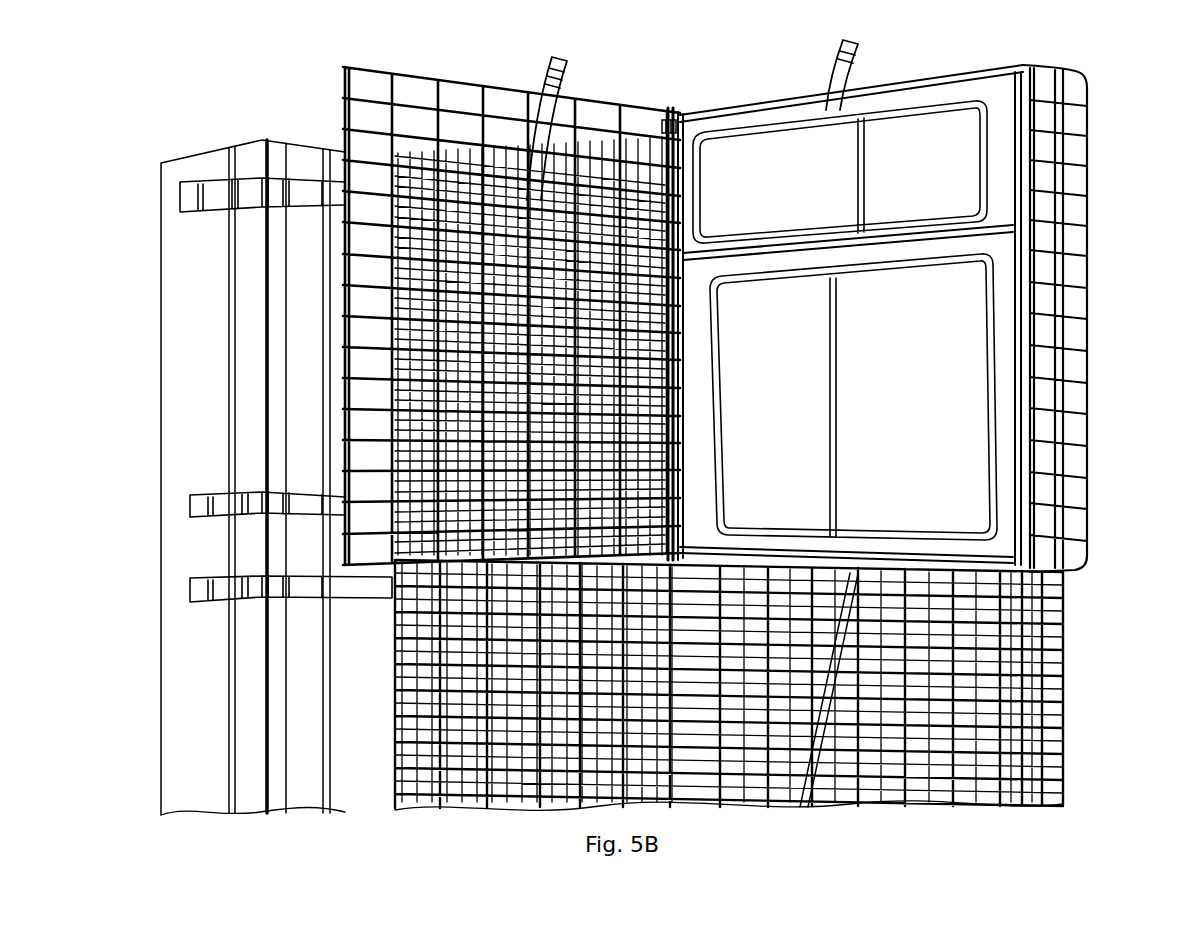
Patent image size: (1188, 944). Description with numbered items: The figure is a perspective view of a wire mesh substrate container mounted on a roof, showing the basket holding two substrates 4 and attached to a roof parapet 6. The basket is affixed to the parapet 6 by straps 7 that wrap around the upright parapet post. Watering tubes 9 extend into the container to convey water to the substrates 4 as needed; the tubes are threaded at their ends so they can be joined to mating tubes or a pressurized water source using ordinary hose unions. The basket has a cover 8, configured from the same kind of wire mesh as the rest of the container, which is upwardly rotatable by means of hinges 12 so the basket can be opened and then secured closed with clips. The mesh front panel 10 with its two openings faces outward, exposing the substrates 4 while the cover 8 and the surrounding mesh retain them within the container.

The substrate 4 is at (922, 174).
The parapet 6 is at (175, 325).
The strap 7 is at (200, 190).
The cover 8 is at (410, 78).
The watering tube 9 is at (566, 57).
The front panel 10 is at (898, 318).
The hinge 12 is at (663, 120).